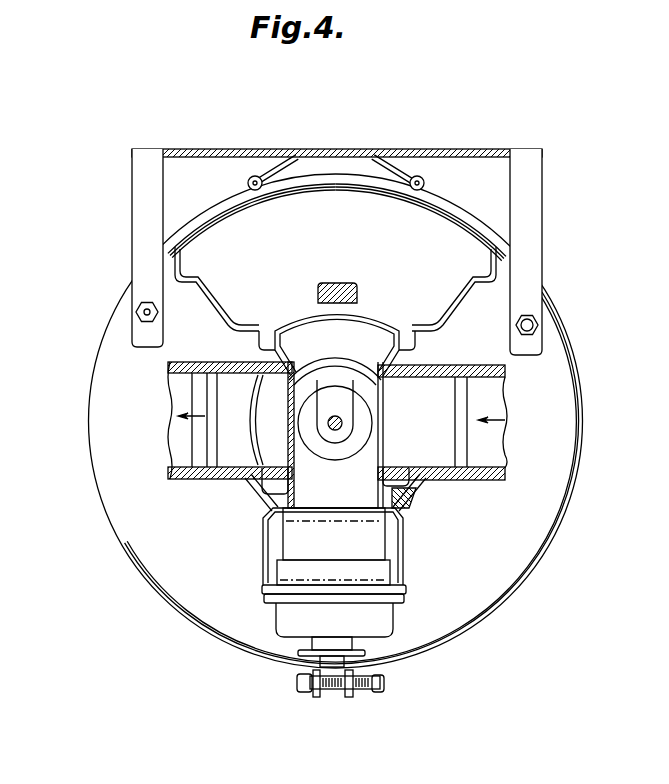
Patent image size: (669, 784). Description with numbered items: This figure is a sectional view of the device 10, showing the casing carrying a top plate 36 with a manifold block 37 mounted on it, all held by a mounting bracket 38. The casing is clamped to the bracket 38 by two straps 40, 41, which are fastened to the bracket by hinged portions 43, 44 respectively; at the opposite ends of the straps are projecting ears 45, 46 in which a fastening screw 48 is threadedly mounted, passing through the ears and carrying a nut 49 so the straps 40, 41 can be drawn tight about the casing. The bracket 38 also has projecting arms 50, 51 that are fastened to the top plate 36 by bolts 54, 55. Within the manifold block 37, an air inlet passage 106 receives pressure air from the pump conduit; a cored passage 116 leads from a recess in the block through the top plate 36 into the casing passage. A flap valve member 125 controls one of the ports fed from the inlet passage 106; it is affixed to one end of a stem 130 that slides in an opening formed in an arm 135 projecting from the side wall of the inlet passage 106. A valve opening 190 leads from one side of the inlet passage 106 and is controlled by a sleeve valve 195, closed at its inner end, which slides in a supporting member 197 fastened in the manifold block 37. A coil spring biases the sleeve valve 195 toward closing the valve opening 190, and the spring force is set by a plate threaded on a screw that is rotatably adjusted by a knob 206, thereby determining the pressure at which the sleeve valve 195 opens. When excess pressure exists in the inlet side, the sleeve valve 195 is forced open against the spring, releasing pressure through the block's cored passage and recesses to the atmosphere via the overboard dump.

The device 10 is at (86, 410).
The top plate 36 is at (565, 363).
The manifold block 37 is at (348, 265).
The mounting bracket 38 is at (450, 156).
The strap 40 is at (218, 199).
The strap 41 is at (452, 208).
The hinged portion 43 is at (247, 183).
The hinged portion 44 is at (425, 183).
The projecting ear 45 is at (317, 693).
The projecting ear 46 is at (350, 693).
The fastening screw 48 is at (383, 688).
The nut 49 is at (308, 687).
The projecting arm 50 is at (133, 242).
The projecting arm 51 is at (538, 246).
The bolt 54 is at (140, 312).
The bolt 55 is at (530, 321).
The air inlet passage 106 is at (446, 448).
The cored passage 116 is at (350, 346).
The flap valve member 125 is at (368, 418).
The stem 130 is at (339, 429).
The arm 135 is at (352, 395).
The valve opening 190 is at (310, 485).
The sleeve valve 195 is at (354, 556).
The supporting member 197 is at (283, 597).
The knob 206 is at (367, 653).